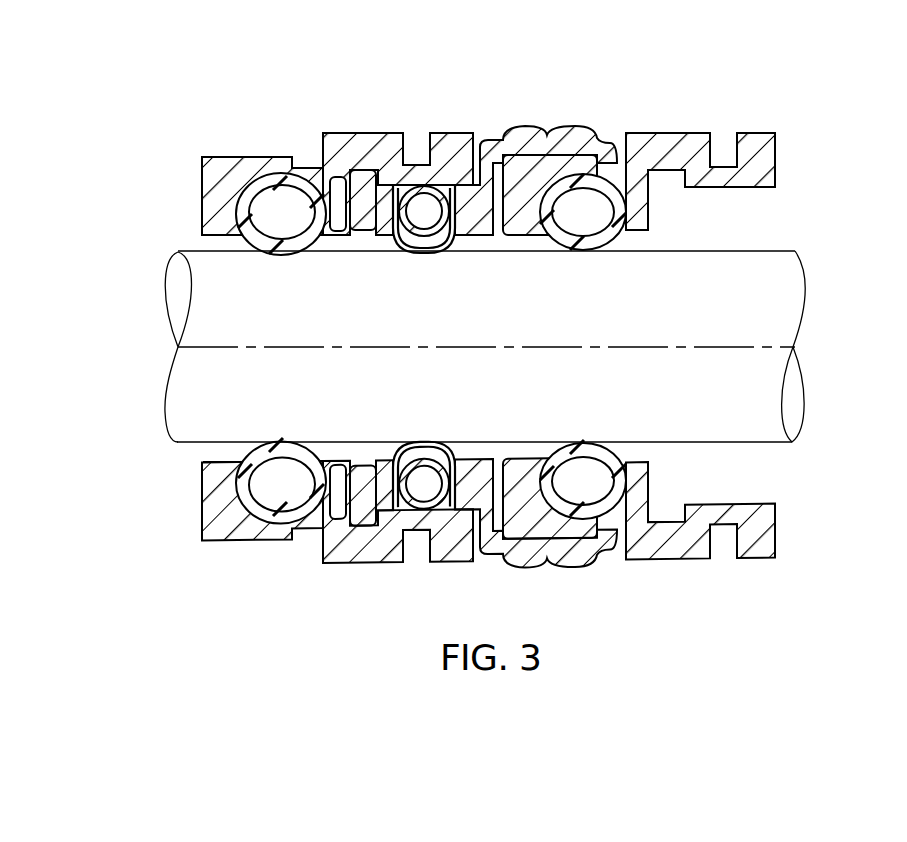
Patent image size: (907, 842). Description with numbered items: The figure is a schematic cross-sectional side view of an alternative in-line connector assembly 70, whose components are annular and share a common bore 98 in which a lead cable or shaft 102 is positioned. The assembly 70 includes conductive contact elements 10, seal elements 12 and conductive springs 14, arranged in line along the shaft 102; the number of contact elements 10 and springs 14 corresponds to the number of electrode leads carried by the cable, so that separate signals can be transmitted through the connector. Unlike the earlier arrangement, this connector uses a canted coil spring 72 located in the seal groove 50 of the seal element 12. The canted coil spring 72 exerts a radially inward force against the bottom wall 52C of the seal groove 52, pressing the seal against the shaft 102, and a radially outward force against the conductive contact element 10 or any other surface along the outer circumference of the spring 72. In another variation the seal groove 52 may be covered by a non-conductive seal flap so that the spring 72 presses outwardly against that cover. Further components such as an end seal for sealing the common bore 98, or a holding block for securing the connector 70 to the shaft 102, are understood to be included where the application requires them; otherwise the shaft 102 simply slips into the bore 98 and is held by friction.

The conductive contact element 10 is at (225, 148).
The seal element 12 is at (524, 118).
The conductive spring 14 is at (284, 262).
The seal groove 50 is at (420, 253).
The seal groove 52 is at (425, 482).
The bottom wall 52C is at (421, 228).
The in-line connector assembly 70 is at (449, 319).
The canted coil spring 72 is at (443, 230).
The common bore 98 is at (205, 462).
The lead cable or shaft 102 is at (790, 297).